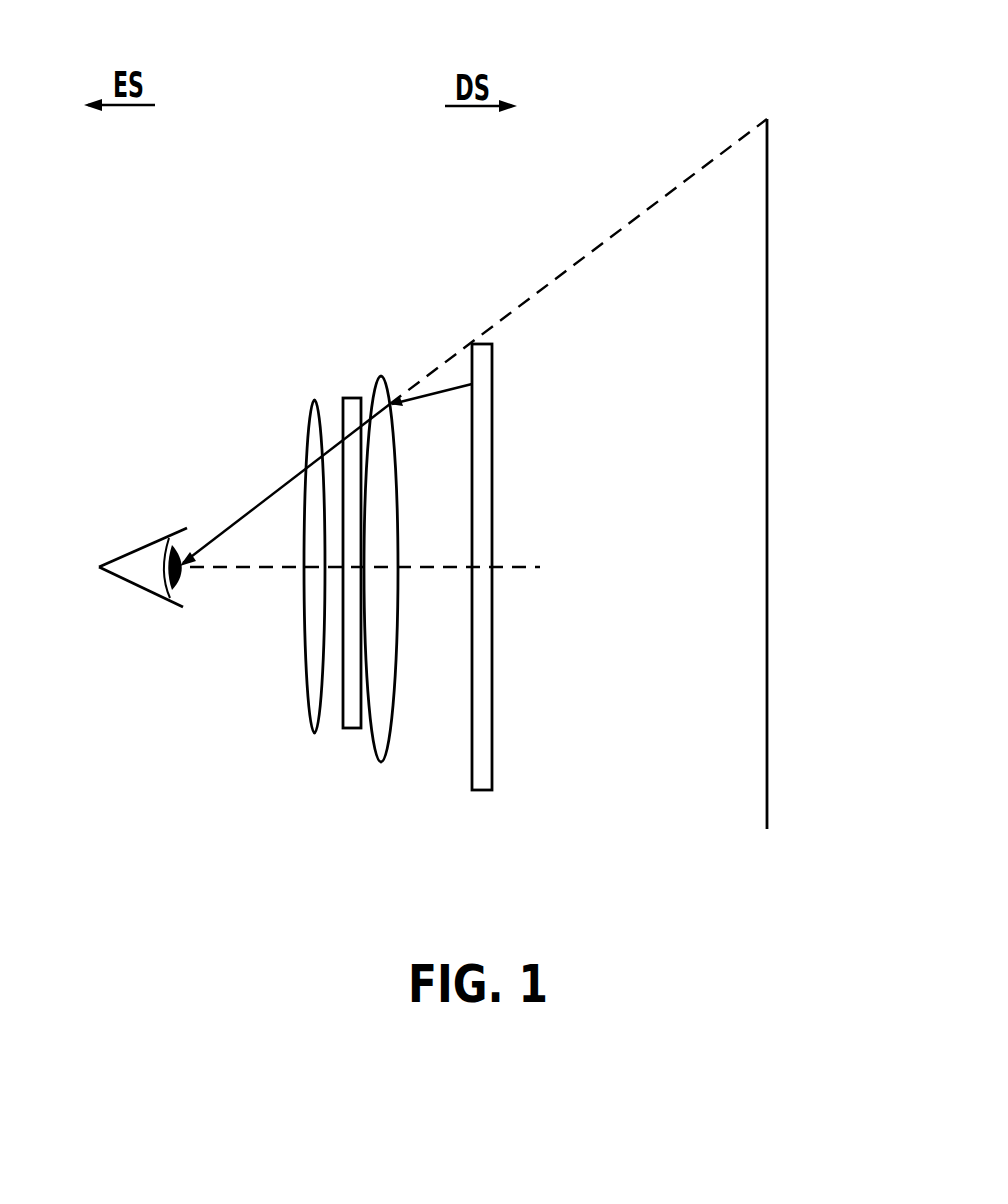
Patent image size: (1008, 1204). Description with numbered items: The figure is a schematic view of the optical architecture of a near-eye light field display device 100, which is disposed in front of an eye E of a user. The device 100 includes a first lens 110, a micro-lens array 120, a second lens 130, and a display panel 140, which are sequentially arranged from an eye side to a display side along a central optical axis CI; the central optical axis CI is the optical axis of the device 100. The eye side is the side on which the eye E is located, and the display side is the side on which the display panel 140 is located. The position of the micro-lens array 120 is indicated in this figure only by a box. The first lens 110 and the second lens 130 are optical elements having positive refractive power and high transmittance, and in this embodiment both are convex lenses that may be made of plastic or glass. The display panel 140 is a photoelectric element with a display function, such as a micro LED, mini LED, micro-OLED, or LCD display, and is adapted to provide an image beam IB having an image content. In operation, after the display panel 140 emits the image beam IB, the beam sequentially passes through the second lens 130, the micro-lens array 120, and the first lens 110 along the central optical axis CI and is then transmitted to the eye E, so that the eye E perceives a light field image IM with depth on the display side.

The near-eye light field display device 100 is at (837, 884).
The first lens 110 is at (312, 730).
The micro-lens array 120 is at (350, 726).
The second lens 130 is at (381, 760).
The display panel 140 is at (482, 778).
The eye E is at (141, 592).
The image beam IB is at (262, 500).
The central optical axis CI is at (538, 566).
The light field image IM is at (767, 178).